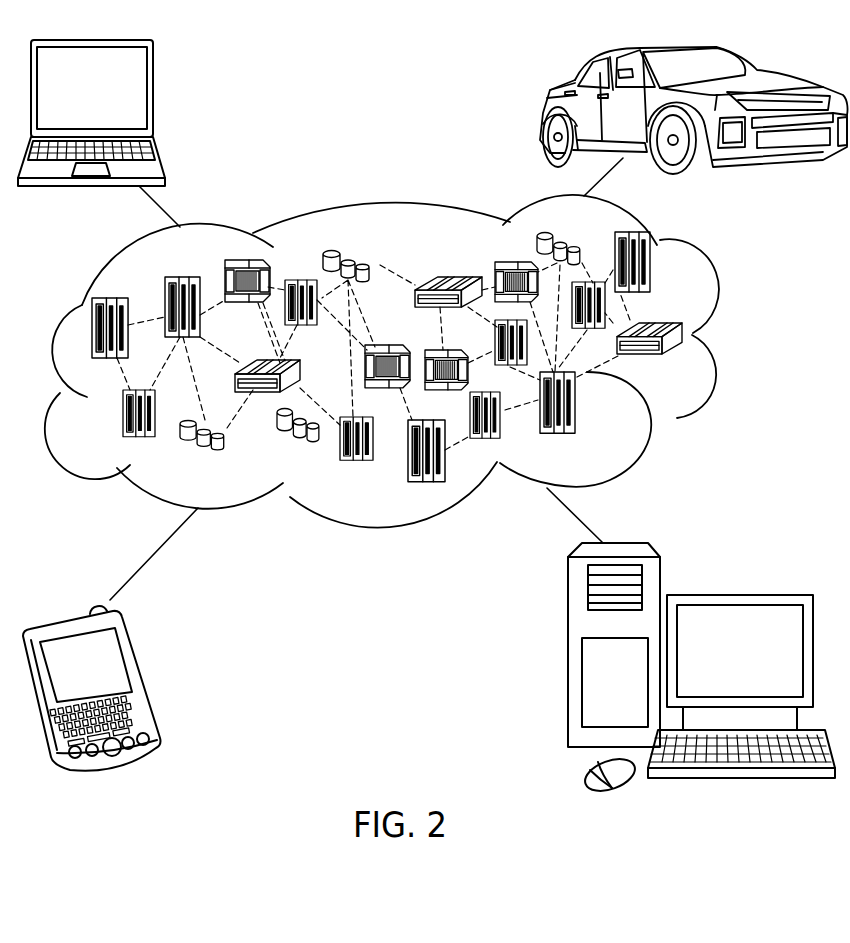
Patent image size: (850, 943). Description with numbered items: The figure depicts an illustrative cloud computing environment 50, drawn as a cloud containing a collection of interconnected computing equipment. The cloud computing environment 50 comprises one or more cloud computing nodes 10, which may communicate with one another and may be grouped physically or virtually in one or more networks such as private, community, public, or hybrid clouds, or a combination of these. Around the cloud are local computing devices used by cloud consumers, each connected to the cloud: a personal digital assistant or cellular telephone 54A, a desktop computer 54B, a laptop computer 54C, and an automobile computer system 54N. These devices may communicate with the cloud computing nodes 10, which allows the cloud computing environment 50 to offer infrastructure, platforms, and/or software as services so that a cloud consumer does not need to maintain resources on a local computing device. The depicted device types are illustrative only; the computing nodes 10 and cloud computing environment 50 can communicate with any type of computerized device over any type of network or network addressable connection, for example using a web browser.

The cloud computing environment 50 is at (738, 330).
The cloud computing nodes 10 is at (690, 366).
The personal digital assistant or cellular telephone 54A is at (145, 676).
The desktop computer 54B is at (737, 593).
The laptop computer 54C is at (153, 93).
The automobile computer system 54N is at (540, 108).